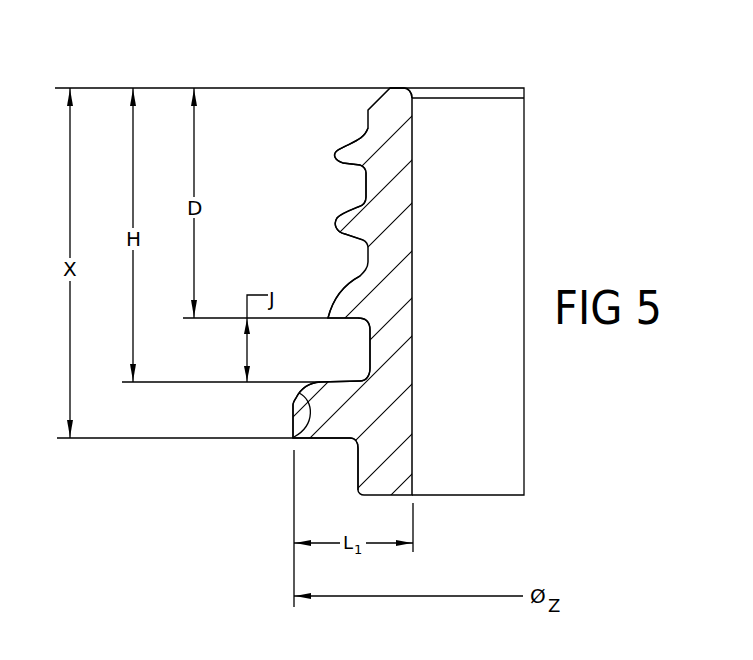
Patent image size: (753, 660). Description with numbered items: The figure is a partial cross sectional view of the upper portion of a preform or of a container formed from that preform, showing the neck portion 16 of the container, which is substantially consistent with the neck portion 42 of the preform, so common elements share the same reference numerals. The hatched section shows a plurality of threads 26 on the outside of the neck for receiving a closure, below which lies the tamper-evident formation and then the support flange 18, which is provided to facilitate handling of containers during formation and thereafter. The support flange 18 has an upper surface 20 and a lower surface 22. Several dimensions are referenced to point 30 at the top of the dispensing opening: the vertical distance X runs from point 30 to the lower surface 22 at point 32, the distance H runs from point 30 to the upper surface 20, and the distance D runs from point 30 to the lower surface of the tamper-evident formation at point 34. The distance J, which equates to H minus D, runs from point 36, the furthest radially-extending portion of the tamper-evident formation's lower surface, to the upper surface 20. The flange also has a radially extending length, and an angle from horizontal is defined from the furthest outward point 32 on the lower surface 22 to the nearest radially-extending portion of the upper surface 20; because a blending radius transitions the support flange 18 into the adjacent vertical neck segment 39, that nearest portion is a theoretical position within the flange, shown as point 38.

The neck portion 16 is at (484, 250).
The neck portion 42 is at (322, 65).
The point 30 is at (378, 88).
The threads 26 is at (310, 140).
The point 34 is at (358, 277).
The point 36 is at (317, 318).
The segment 39 is at (371, 332).
The point 38 is at (368, 379).
The upper surface 20 is at (335, 380).
The point 32 is at (292, 402).
The support flange 18 is at (280, 425).
The lower surface 22 is at (320, 440).